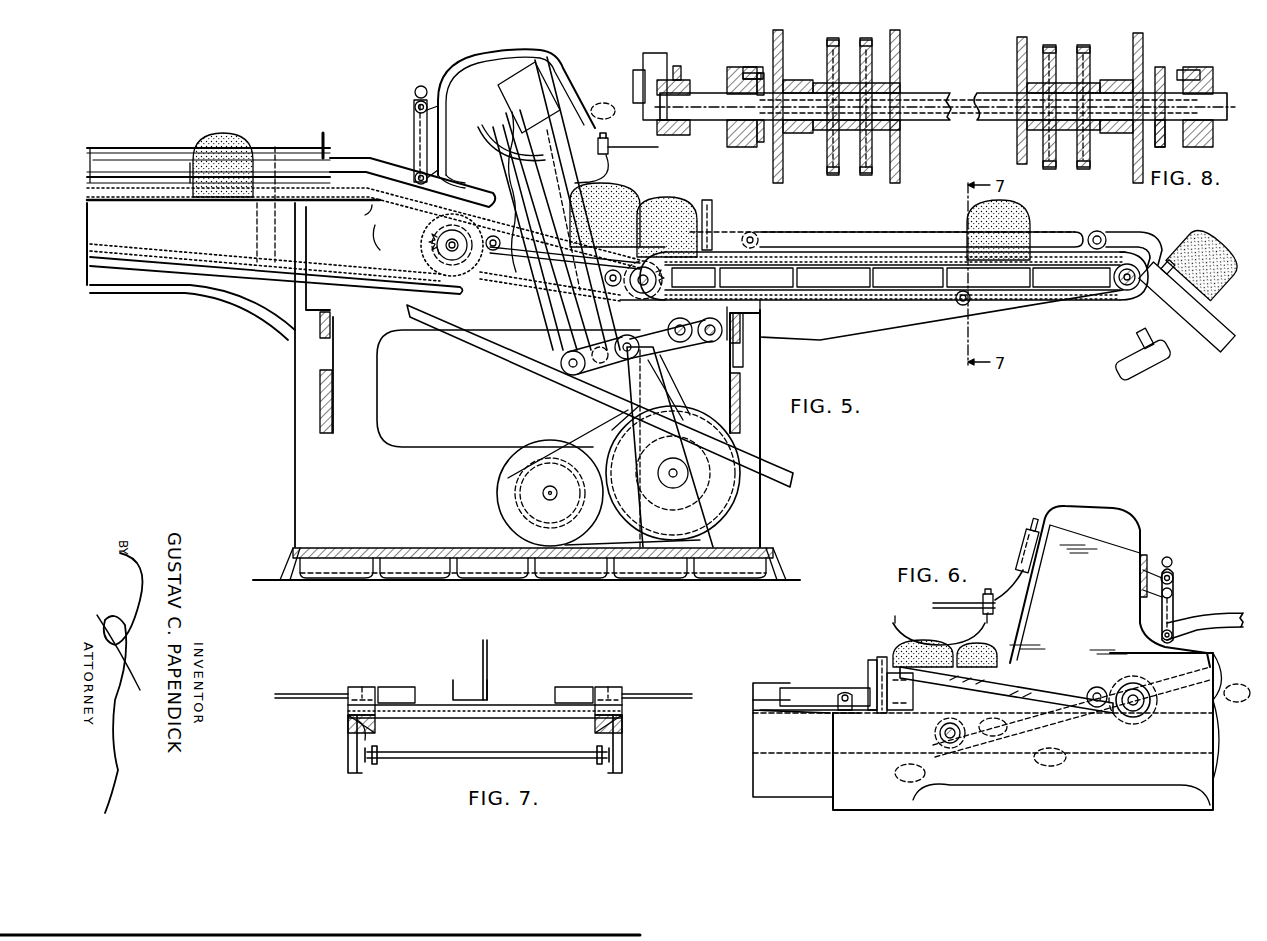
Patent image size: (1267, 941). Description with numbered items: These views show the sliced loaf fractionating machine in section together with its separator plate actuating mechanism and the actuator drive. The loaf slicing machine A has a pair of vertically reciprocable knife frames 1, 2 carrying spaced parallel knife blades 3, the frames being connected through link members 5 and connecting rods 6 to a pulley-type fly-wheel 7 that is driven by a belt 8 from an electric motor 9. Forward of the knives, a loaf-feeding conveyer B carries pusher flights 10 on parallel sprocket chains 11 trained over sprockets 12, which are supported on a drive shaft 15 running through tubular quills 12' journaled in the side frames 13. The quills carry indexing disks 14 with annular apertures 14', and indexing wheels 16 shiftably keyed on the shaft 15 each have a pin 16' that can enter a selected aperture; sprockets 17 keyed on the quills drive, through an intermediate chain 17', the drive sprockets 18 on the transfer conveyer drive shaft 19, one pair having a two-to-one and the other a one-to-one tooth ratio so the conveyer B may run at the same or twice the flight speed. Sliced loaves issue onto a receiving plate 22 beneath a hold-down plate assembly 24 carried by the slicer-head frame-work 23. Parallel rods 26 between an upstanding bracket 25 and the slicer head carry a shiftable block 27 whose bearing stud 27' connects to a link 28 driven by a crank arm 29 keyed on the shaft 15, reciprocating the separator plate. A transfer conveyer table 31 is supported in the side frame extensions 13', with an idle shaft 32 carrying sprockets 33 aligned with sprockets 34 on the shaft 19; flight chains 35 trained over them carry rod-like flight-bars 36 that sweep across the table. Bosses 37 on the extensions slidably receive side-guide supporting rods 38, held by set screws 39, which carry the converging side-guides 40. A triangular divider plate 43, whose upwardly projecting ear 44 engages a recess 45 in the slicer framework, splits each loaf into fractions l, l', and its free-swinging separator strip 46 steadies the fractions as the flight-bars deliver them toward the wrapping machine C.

In FIG. 5, the knife frame 1 is at (470, 120).
In FIG. 5, the knife frame 2 is at (497, 110).
In FIG. 5, the knife blades 3 is at (518, 150).
In FIG. 5, the link members 5 is at (607, 362).
In FIG. 5, the connecting rods 6 is at (660, 395).
In FIG. 5, the pulley-type fly-wheel 7 is at (725, 497).
In FIG. 5, the belt 8 is at (600, 437).
In FIG. 5, the electric motor 9 is at (497, 483).
In FIG. 5, the pusher flights 10 is at (176, 185).
In FIG. 5, the sprocket chains 11 is at (443, 363).
In FIG. 8, the sprocket chains 11 is at (903, 46).
In FIG. 6, the sprocket chains 11 is at (1210, 715).
In FIG. 5, the sprockets 12 is at (433, 245).
In FIG. 8, the sprockets 12 is at (956, 93).
In FIG. 8, the tubular shafts or quills 12' is at (961, 106).
In FIG. 8, the side frames 13 is at (975, 106).
In FIG. 6, the side frames 13 is at (1027, 731).
In FIG. 5, the side frame extensions 13' is at (941, 319).
In FIG. 7, the side frame extensions 13' is at (499, 754).
In FIG. 6, the side frame extensions 13' is at (780, 748).
In FIG. 8, the indexing disks 14 is at (972, 90).
In FIG. 8, the apertures 14' is at (971, 122).
In FIG. 5, the drive shaft 15 is at (430, 232).
In FIG. 8, the drive shaft 15 is at (928, 122).
In FIG. 6, the drive shaft 15 is at (1140, 710).
In FIG. 8, the indexing wheels 16 is at (970, 102).
In FIG. 8, the pin 16' is at (980, 56).
In FIG. 5, the sprockets 17 is at (363, 248).
In FIG. 8, the sprockets 17 is at (970, 120).
In FIG. 6, the sprockets 17 is at (983, 717).
In FIG. 8, the intermediate drive chain 17' is at (966, 100).
In FIG. 6, the drive sprockets 18 is at (993, 727).
In FIG. 5, the transfer conveyer drive shaft 19 is at (630, 296).
In FIG. 6, the transfer conveyer drive shaft 19 is at (952, 745).
In FIG. 5, the receiving plate 22 is at (570, 255).
In FIG. 6, the slicer-head frame-work 23 is at (1057, 625).
In FIG. 5, the hold-down plate assembly 24 is at (712, 202).
In FIG. 6, the hold-down plate assembly 24 is at (883, 650).
In FIG. 6, the upstanding bracket 25 is at (883, 710).
In FIG. 6, the parallel rods 26 is at (1067, 642).
In FIG. 6, the shiftable block 27 is at (940, 622).
In FIG. 6, the bearing stud 27' is at (860, 685).
In FIG. 8, the link 28 is at (645, 57).
In FIG. 6, the link 28 is at (1020, 683).
In FIG. 8, the crank arm 29 is at (678, 67).
In FIG. 6, the crank arm 29 is at (1135, 705).
In FIG. 5, the transfer conveyer table 31 is at (826, 272).
In FIG. 7, the transfer conveyer table 31 is at (518, 725).
In FIG. 5, the idle shaft 32 is at (1122, 290).
In FIG. 5, the sprockets 33 is at (1087, 302).
In FIG. 5, the sprockets 34 is at (665, 279).
In FIG. 6, the sprockets 34 is at (940, 745).
In FIG. 5, the flight chains 35 is at (892, 250).
In FIG. 7, the flight chains 35 is at (355, 745).
In FIG. 6, the flight chains 35 is at (770, 718).
In FIG. 5, the flight-bars 36 is at (618, 297).
In FIG. 7, the flight-bars 36 is at (460, 752).
In FIG. 5, the bosses 37 is at (770, 235).
In FIG. 7, the bosses 37 is at (348, 718).
In FIG. 6, the bosses 37 is at (825, 713).
In FIG. 7, the side-guide supporting rods 38 is at (320, 693).
In FIG. 7, the set screws 39 is at (360, 686).
In FIG. 5, the side-guides 40 is at (1122, 232).
In FIG. 7, the side-guides 40 is at (403, 686).
In FIG. 6, the side-guides 40 is at (795, 687).
In FIG. 5, the divider plate 43 is at (585, 172).
In FIG. 7, the divider plate 43 is at (490, 643).
In FIG. 5, the upwardly projecting ear 44 is at (520, 140).
In FIG. 5, the recess 45 is at (560, 140).
In FIG. 5, the separator strip 46 is at (866, 232).
In FIG. 7, the separator strip 46 is at (458, 685).
In FIG. 6, the separator strip 46 is at (762, 682).
In FIG. 5, the loaf slicing machine A is at (443, 85).
In FIG. 6, the loaf slicing machine A is at (1130, 520).
In FIG. 5, the loaf-feeding conveyer B is at (125, 190).
In FIG. 5, the wrapping machine C is at (1200, 310).
In FIG. 5, the loaf L is at (228, 140).
In FIG. 5, the loaf fraction l is at (907, 242).
In FIG. 6, the loaf fraction l is at (945, 653).
In FIG. 5, the loaf fraction l' is at (856, 204).